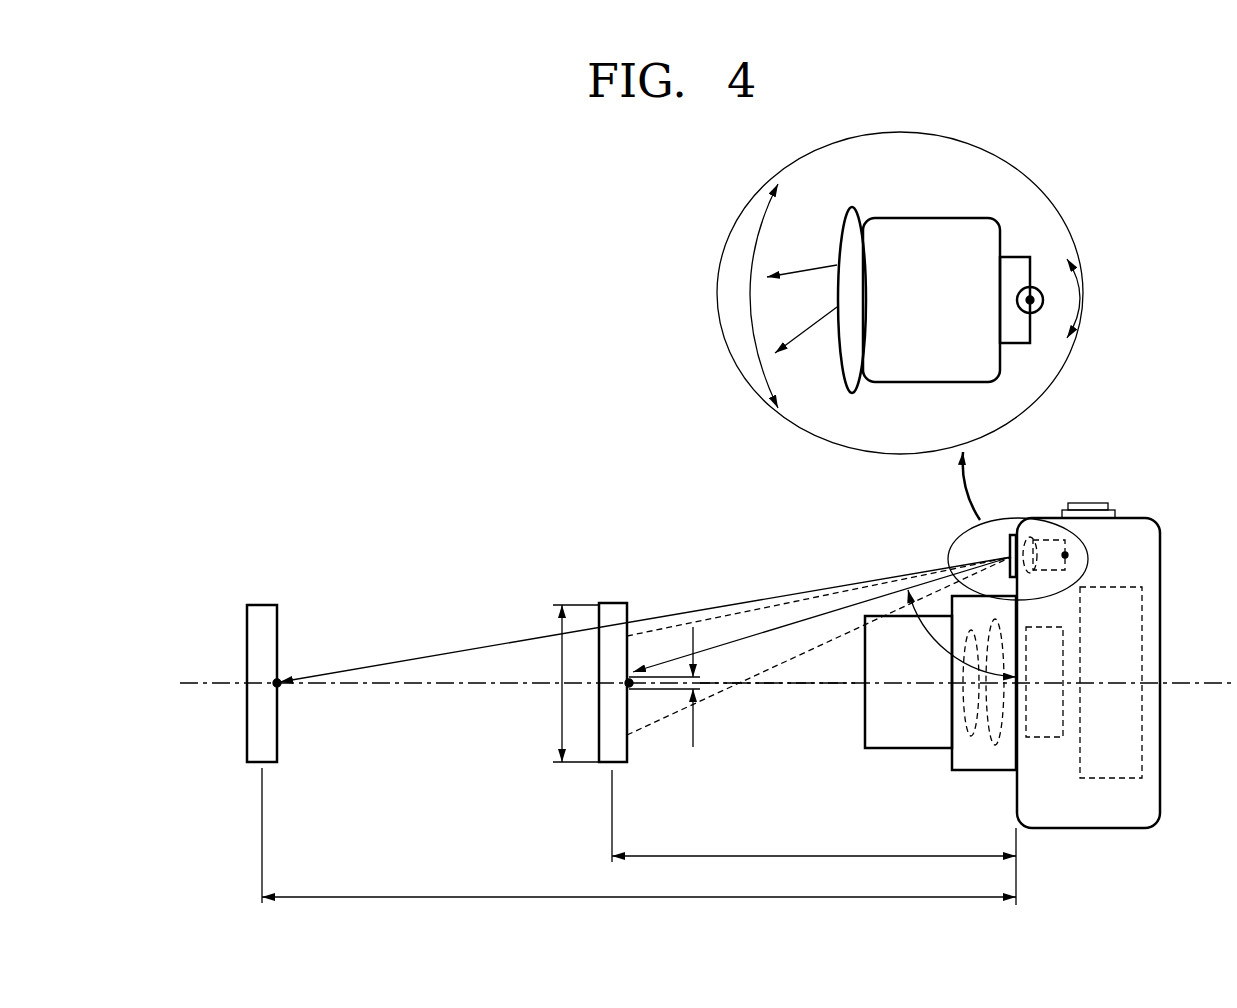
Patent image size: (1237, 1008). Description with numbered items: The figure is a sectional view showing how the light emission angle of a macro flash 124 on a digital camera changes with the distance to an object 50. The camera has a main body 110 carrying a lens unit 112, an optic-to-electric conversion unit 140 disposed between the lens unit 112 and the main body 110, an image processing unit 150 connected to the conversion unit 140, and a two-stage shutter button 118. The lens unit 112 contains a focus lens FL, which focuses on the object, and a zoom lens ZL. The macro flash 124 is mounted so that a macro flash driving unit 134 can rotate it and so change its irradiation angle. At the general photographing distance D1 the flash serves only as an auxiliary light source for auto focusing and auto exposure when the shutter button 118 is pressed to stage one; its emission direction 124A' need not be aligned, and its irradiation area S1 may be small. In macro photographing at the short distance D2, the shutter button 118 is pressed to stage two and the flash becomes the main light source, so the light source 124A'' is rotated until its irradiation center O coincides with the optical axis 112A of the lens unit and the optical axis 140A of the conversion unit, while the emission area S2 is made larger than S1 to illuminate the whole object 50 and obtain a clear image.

The object 50 is at (264, 605).
The irradiation center O is at (281, 688).
The main body 110 is at (1140, 532).
The lens unit 112 is at (900, 743).
The optical axis of the lens unit 112A is at (773, 685).
The shutter button 118 is at (1093, 503).
The macro flash 124 is at (923, 228).
The light emission direction of the macro flash 124A' is at (645, 437).
The light source of the macro flash 124A'' is at (819, 521).
The macro flash driving unit 134 is at (1032, 299).
The optic-to-electric conversion unit 140 is at (1042, 733).
The optical axis of the optic-to-electric conversion unit 140A is at (832, 685).
The image processing unit 150 is at (1110, 773).
The focus lens FL is at (968, 728).
The zoom lens ZL is at (994, 743).
The area of light emission at stage one S1 is at (679, 687).
The area of light emission at stage two S2 is at (562, 683).
The distance between the digital camera and the object D1 is at (639, 836).
The distance to the object in macro photographing D2 is at (814, 816).